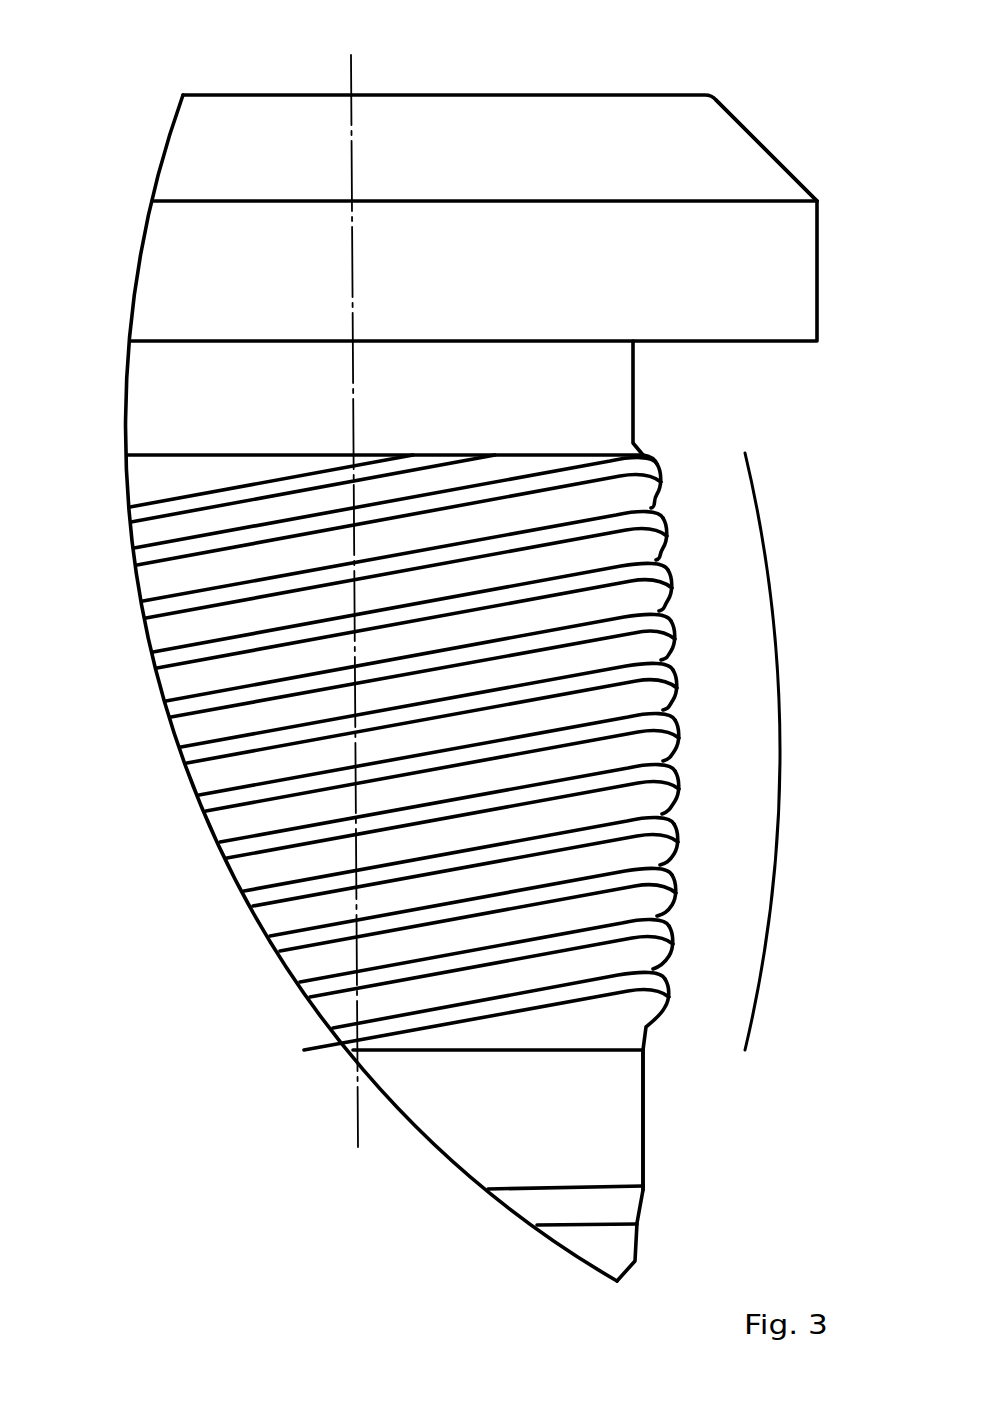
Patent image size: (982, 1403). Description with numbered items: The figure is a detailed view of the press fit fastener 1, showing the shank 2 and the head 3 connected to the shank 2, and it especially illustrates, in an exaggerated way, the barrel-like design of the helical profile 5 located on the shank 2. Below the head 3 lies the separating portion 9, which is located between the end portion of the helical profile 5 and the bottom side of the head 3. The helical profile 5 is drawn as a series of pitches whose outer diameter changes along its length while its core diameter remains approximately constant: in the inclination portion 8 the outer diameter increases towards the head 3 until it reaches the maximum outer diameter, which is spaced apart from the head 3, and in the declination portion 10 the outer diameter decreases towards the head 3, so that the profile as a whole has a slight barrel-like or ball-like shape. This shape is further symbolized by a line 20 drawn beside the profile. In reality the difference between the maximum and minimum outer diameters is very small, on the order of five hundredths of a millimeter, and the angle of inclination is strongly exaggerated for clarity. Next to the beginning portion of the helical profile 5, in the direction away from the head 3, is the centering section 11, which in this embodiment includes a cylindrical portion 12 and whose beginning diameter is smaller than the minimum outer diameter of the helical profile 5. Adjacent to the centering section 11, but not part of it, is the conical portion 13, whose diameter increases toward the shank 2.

The press fit fastener 1 is at (540, 78).
The shank 2 is at (625, 1148).
The head 3 is at (760, 135).
The helical profile 5 is at (148, 528).
The inclination portion 8 is at (648, 852).
The separating portion 9 is at (633, 400).
The declination portion 10 is at (763, 527).
The centering section 11 is at (643, 1070).
The cylindrical portion 12 is at (643, 1103).
The conical portion 13 is at (640, 1212).
The line 20 is at (780, 717).